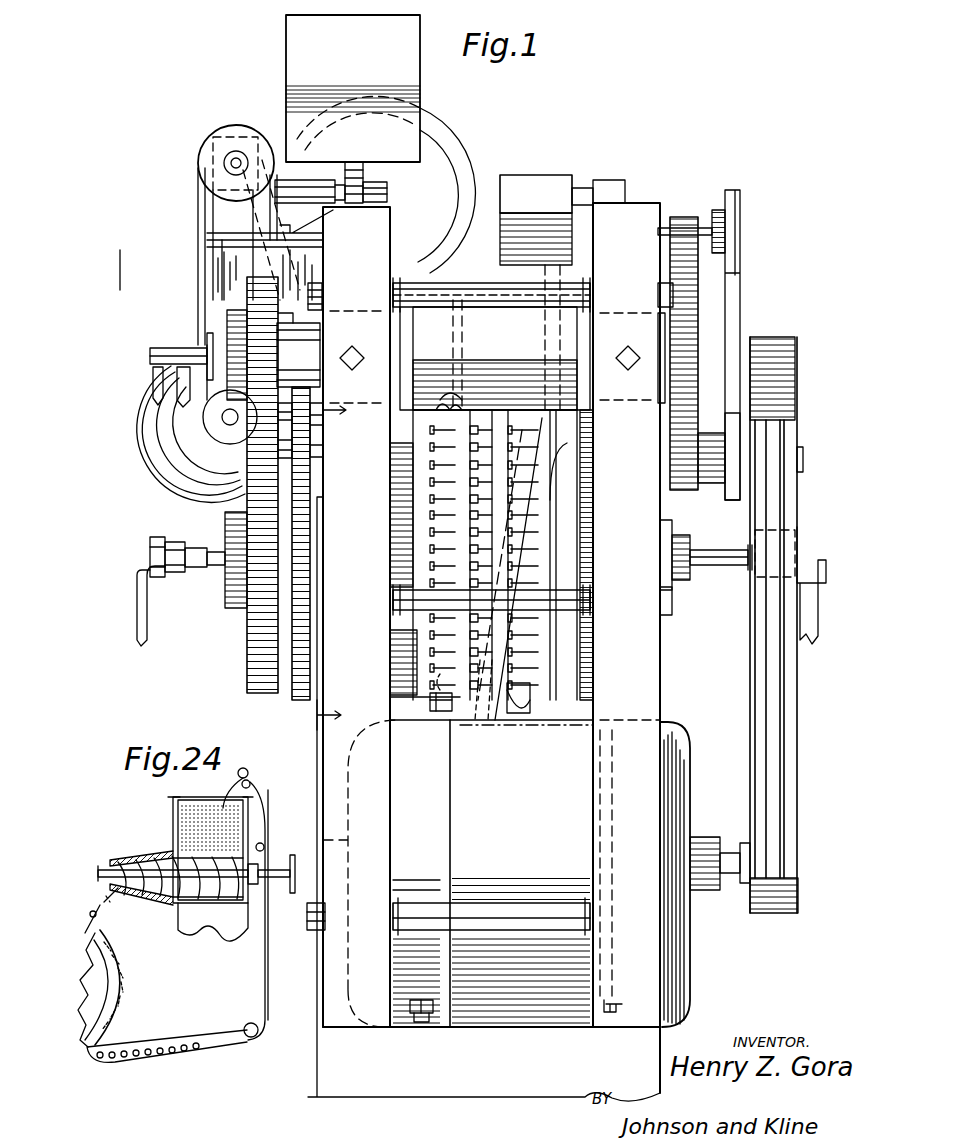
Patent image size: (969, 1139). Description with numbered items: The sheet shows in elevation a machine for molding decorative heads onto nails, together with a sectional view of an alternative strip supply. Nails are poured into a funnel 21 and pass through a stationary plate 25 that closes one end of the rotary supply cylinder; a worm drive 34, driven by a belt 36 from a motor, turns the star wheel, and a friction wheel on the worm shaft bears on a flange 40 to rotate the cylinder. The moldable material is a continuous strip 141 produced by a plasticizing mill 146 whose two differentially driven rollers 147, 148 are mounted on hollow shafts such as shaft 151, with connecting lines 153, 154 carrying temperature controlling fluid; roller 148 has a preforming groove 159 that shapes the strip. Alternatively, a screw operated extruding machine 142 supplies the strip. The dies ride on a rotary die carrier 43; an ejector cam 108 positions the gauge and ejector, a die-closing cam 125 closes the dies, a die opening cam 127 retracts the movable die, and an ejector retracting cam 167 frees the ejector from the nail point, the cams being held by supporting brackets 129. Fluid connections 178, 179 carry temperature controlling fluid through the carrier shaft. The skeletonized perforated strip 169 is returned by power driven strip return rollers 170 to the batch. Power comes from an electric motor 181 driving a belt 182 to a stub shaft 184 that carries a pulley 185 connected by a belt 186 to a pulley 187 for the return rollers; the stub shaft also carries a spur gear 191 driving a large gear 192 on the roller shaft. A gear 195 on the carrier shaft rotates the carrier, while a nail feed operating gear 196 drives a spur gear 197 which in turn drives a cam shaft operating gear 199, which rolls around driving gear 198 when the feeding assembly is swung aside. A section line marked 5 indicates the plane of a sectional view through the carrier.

In FIG. 1, the section line 5- 5 is at (337, 564).
In FIG. 1, the funnel 21 is at (296, 42).
In FIG. 1, the stationary plate 25 is at (424, 172).
In FIG. 1, the worm drive 34 is at (218, 152).
In FIG. 1, the belt 36 is at (200, 272).
In FIG. 1, the flange 40 is at (447, 132).
In FIG. 1, the die carrier 43 is at (547, 540).
In FIG. 24, the die carrier 43 is at (138, 982).
In FIG. 1, the ejector cam 108 is at (410, 528).
In FIG. 1, the die-closing cam 125 is at (565, 560).
In FIG. 1, the die opening cam 127 is at (522, 712).
In FIG. 1, the supporting brackets 129 is at (590, 520).
In FIG. 24, the continuous strip 141 is at (97, 906).
In FIG. 24, the screw operated extruding machine 142 is at (162, 851).
In FIG. 1, the plasticizing mill 146 is at (514, 280).
In FIG. 1, the mill roller 147 is at (578, 335).
In FIG. 1, the mill roller 148 is at (450, 410).
In FIG. 1, the hollow shaft 151 is at (310, 346).
In FIG. 1, the connecting line 153 is at (158, 390).
In FIG. 1, the connecting line 154 is at (182, 402).
In FIG. 1, the preforming groove 159 is at (457, 295).
In FIG. 1, the ejector retracting cam 167 is at (414, 706).
In FIG. 24, the perforated strip 169 is at (165, 1052).
In FIG. 1, the strip return rollers 170 is at (547, 186).
In FIG. 24, the strip return rollers 170 is at (250, 772).
In FIG. 1, the fluid connection 178 is at (145, 645).
In FIG. 1, the fluid connection 179 is at (815, 620).
In FIG. 1, the electric motor 181 is at (675, 742).
In FIG. 1, the belt 182 is at (786, 716).
In FIG. 1, the stub shaft 184 is at (804, 460).
In FIG. 1, the pulley 185 is at (724, 490).
In FIG. 1, the belt 186 is at (742, 300).
In FIG. 1, the pulley 187 is at (738, 212).
In FIG. 1, the spur gear 191 is at (682, 478).
In FIG. 1, the large gear 192 is at (682, 216).
In FIG. 1, the carrier rotating gear 195 is at (262, 682).
In FIG. 1, the nail feed operating gear 196 is at (300, 700).
In FIG. 1, the spur gear 197 is at (300, 408).
In FIG. 1, the driving gear 198 is at (315, 447).
In FIG. 1, the cam shaft operating gear 199 is at (312, 313).